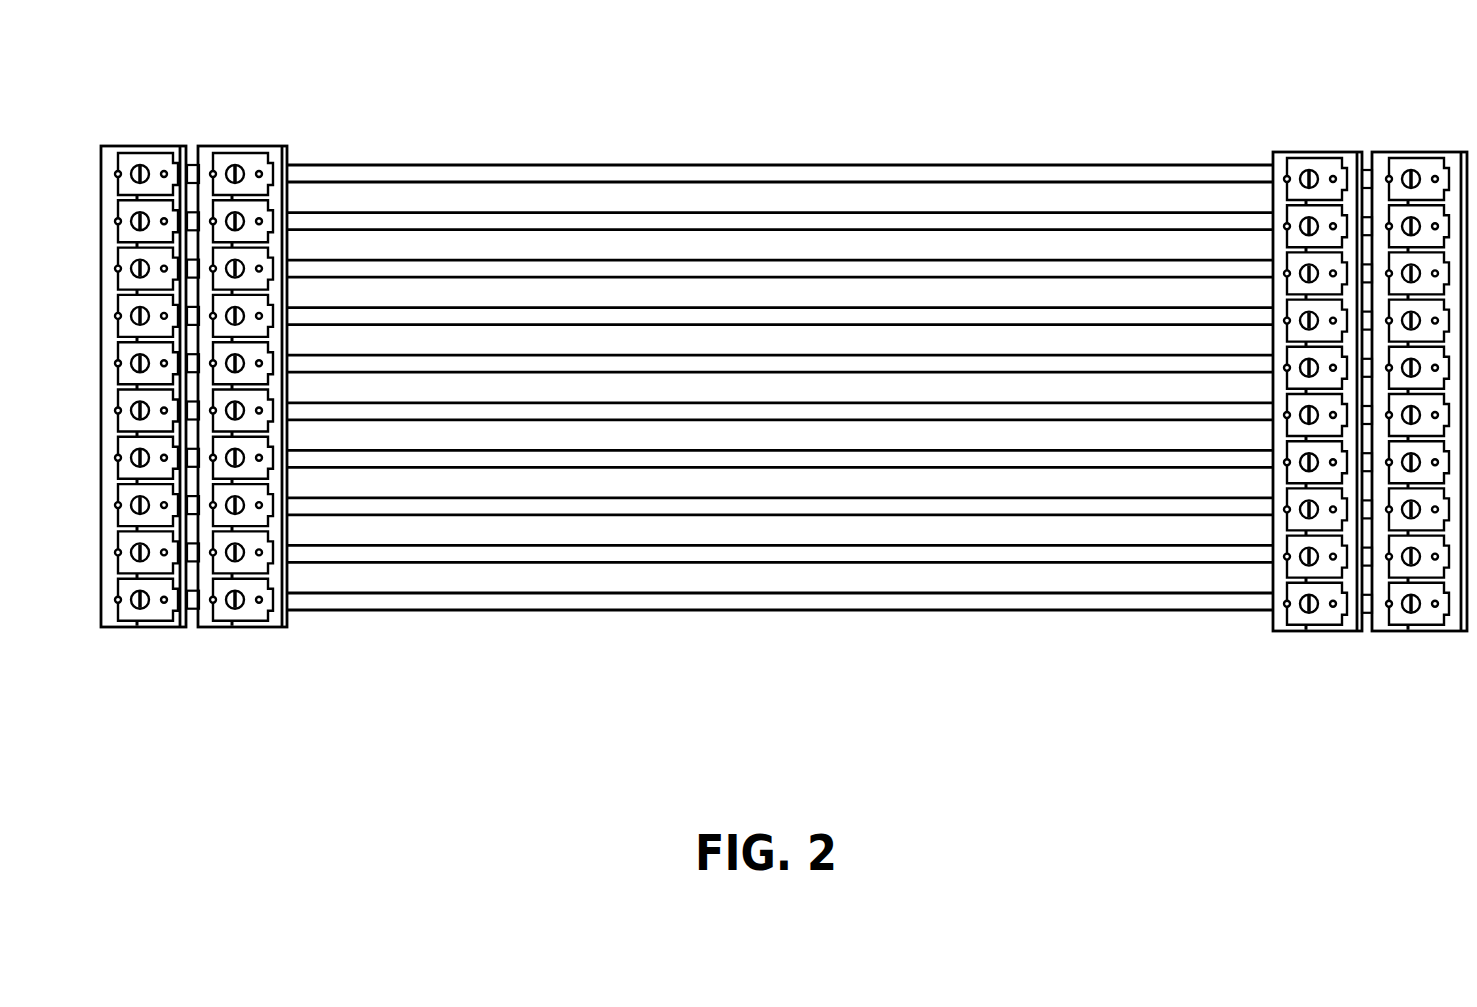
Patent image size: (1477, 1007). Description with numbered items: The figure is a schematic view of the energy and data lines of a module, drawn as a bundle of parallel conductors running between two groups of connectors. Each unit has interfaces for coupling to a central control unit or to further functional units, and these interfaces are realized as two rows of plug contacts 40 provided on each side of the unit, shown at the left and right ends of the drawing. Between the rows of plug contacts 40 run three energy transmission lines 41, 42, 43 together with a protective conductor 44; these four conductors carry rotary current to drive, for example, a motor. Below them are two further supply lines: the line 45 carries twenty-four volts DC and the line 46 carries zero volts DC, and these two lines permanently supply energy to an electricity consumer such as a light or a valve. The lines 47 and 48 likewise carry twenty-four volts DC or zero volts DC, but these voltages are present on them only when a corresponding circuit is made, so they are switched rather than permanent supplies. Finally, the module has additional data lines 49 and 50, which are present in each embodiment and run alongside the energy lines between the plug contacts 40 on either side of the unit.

The plug contacts 40 is at (253, 157).
The energy transmission line 41 is at (625, 175).
The energy transmission line 42 is at (723, 222).
The energy transmission line 43 is at (827, 267).
The protective conductor 44 is at (480, 317).
The line 45 is at (492, 362).
The line 46 is at (583, 412).
The line 47 is at (715, 458).
The line 48 is at (829, 505).
The data line 49 is at (958, 553).
The data line 50 is at (1085, 602).